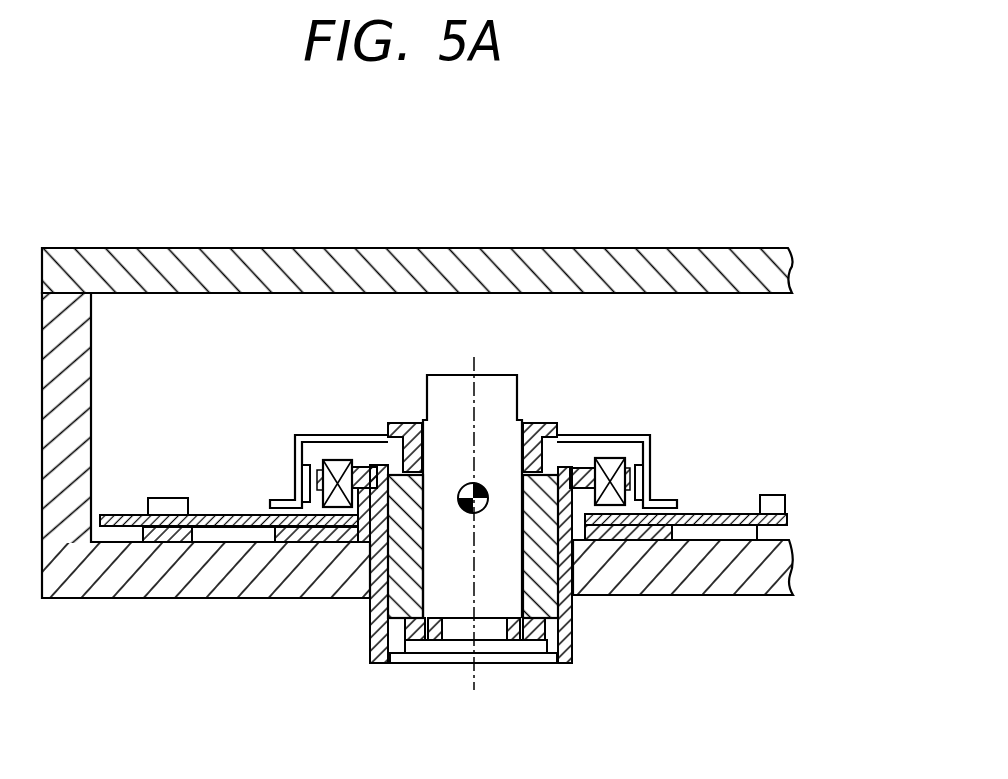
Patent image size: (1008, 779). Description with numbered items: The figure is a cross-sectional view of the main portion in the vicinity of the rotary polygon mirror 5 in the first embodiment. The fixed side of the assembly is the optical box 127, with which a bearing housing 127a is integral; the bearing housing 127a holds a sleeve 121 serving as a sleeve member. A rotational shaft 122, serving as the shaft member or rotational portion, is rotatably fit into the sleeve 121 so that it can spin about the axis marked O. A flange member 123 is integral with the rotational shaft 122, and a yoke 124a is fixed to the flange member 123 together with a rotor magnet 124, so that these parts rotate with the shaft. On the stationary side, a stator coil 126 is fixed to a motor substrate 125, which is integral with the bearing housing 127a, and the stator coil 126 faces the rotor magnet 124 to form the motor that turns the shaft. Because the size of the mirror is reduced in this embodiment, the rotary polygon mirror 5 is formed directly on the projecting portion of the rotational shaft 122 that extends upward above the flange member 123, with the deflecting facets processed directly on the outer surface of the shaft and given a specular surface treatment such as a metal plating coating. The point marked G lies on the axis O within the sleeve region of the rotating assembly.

The rotary polygon mirror 5 is at (432, 434).
The center of gravity G is at (452, 486).
The optical axis O is at (472, 527).
The sleeve 121 is at (573, 600).
The rotational shaft 122 is at (454, 392).
The flange member 123 is at (533, 423).
The rotor magnet 124 is at (305, 482).
The yoke 124a is at (293, 455).
The motor substrate 125 is at (732, 514).
The stator coil 126 is at (337, 500).
The optical box 127 is at (775, 563).
The bearing housing 127a is at (617, 535).